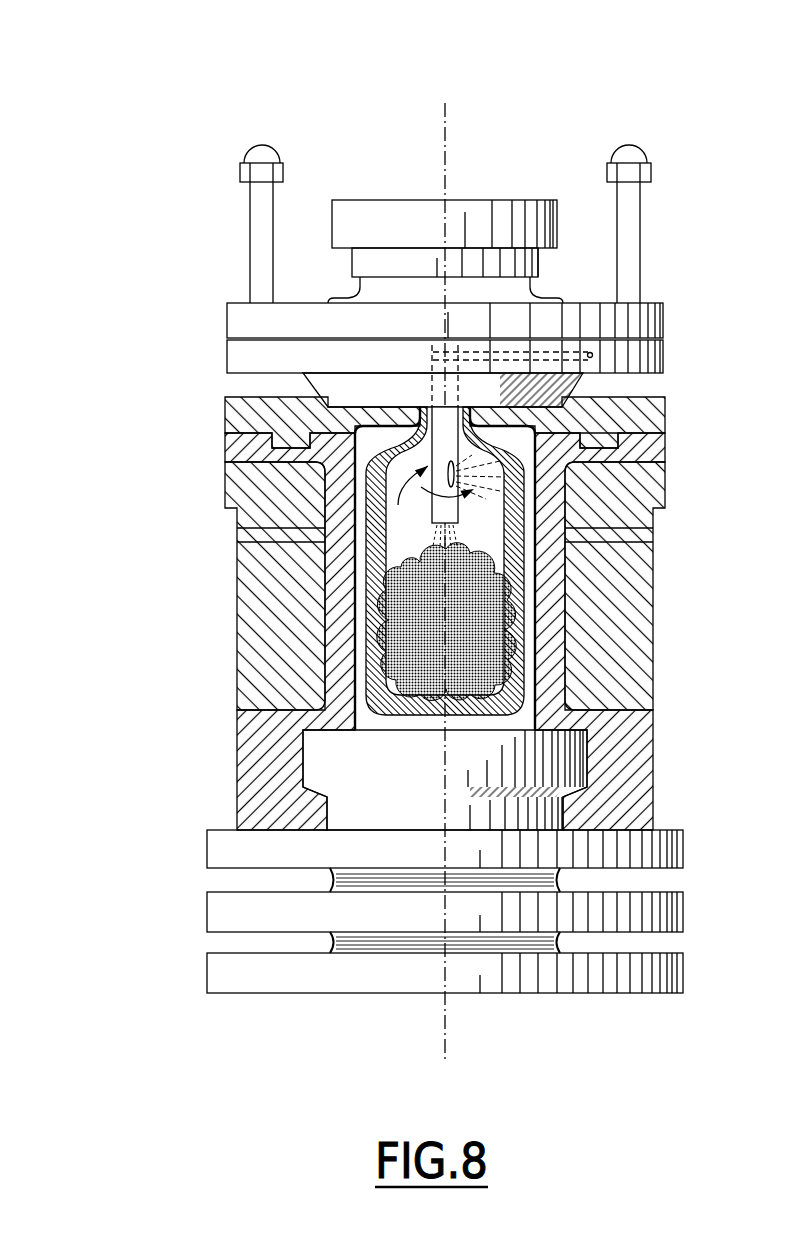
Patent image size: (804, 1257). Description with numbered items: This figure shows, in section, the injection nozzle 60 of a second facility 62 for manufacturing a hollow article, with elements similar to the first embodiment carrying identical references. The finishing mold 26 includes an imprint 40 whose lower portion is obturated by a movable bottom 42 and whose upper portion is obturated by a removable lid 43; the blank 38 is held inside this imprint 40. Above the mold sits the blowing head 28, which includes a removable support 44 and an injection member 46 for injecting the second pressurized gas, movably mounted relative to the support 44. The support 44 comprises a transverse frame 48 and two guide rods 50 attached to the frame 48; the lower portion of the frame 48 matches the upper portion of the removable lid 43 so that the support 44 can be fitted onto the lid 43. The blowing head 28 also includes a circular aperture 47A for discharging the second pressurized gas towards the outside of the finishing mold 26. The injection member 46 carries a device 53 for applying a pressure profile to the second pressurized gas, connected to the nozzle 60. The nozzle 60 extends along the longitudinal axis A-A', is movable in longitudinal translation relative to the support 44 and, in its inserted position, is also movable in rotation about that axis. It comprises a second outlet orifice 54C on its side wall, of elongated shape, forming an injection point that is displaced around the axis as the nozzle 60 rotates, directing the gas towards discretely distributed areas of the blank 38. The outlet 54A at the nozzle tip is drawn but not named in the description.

The second facility 62 is at (137, 77).
The blowing head 28 is at (195, 185).
The guide rods 50 is at (260, 243).
The injection member 46 is at (558, 188).
The device for applying a pressure profile 53 is at (500, 210).
The aperture 47A is at (590, 351).
The removable support 44 is at (215, 352).
The transverse frame 48 is at (638, 358).
The removable lid 43 is at (250, 415).
The finishing mold 26 is at (205, 498).
The second outlet orifice 54C is at (520, 467).
The blank 38 is at (518, 500).
The nozzle outlet 54A is at (453, 533).
The injection nozzle 60 is at (410, 497).
The imprint 40 is at (370, 715).
The movable bottom 42 is at (472, 812).